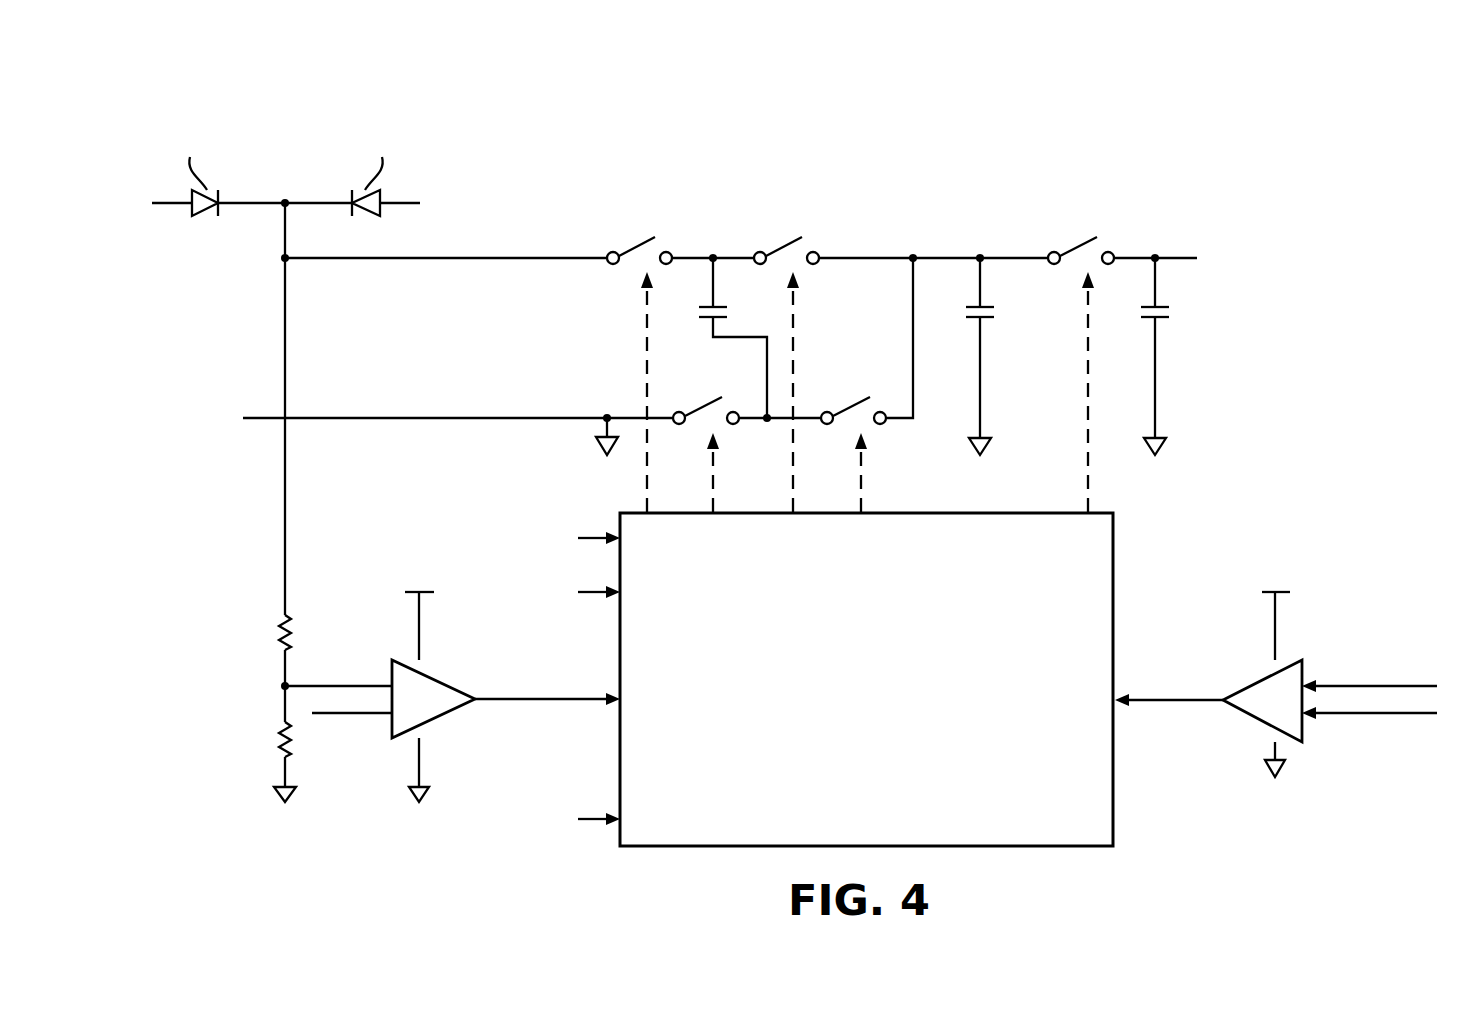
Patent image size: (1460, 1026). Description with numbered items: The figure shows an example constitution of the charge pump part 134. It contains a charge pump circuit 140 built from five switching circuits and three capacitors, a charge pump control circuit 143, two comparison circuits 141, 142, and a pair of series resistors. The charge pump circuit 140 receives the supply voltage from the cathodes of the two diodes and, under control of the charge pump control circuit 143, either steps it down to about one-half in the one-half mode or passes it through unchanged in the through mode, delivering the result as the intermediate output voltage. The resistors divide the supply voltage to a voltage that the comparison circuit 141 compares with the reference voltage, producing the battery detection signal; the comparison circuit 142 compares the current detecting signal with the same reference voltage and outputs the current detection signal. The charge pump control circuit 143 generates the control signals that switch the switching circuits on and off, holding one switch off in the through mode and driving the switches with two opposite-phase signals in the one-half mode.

The charge pump part 134 is at (522, 100).
The charge pump circuit 140 is at (971, 205).
The comparison circuit 141 is at (433, 677).
The comparison circuit 142 is at (1263, 678).
The charge pump control circuit 143 is at (1115, 805).